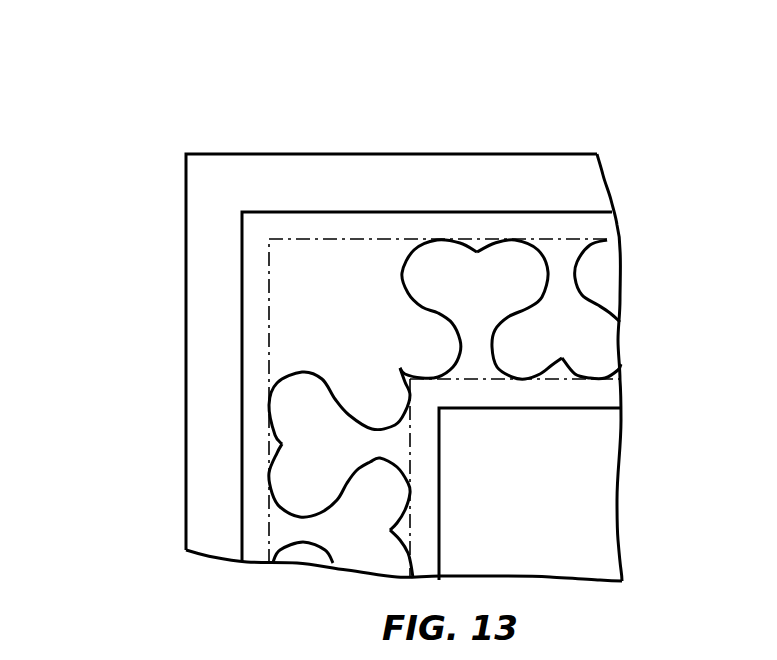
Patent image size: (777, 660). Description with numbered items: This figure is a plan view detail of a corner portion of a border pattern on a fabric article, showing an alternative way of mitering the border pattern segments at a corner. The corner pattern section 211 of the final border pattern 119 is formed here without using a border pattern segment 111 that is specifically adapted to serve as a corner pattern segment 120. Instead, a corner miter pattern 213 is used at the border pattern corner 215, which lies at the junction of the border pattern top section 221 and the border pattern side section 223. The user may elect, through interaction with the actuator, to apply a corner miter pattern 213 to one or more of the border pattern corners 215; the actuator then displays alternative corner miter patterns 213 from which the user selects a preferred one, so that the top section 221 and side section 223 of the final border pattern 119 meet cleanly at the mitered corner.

The border pattern segment 111 is at (535, 243).
The final border pattern 119 is at (455, 350).
The corner pattern segment 120 is at (340, 396).
The corner pattern section 211 is at (415, 292).
The corner miter pattern 213 is at (397, 362).
The border pattern corner 215 is at (403, 370).
The border pattern top section 221 is at (410, 245).
The border pattern side section 223 is at (273, 380).